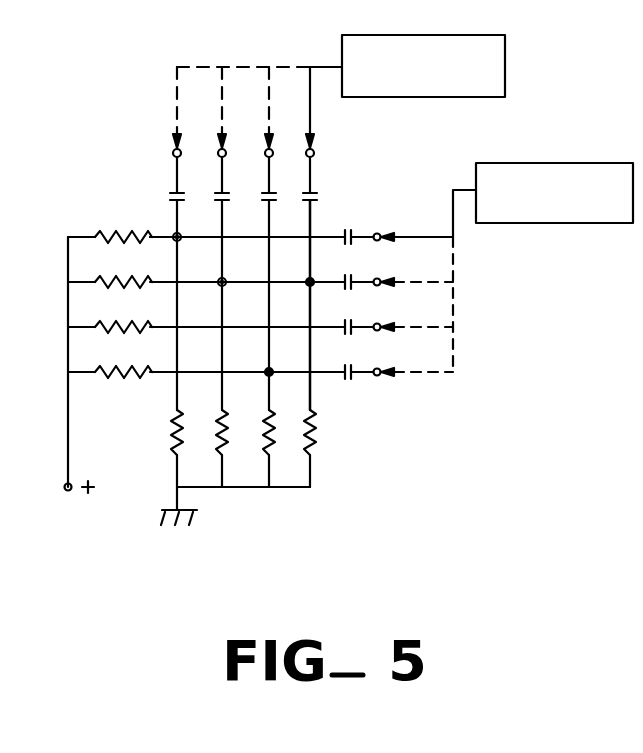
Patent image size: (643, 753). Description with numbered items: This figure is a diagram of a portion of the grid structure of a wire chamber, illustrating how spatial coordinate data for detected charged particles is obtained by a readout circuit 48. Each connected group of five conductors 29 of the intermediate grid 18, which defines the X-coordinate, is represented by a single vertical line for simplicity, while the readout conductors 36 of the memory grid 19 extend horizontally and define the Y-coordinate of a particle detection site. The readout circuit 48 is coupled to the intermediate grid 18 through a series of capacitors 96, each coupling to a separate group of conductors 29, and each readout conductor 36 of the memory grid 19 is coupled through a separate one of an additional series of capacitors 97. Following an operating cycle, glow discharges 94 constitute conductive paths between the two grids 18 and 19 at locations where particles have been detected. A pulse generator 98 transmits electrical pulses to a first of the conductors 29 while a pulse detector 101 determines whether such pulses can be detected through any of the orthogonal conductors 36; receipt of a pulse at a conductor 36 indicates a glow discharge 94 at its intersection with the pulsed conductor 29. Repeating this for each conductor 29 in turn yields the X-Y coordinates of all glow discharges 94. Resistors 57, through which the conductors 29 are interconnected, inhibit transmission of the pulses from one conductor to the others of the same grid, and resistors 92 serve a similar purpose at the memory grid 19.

The intermediate grid 18 is at (313, 218).
The memory grid 19 is at (323, 385).
The conductors 29 is at (310, 318).
The readout conductors 36 is at (243, 239).
The readout circuit 48 is at (522, 148).
The resistors 57 is at (175, 452).
The resistors 92 is at (118, 231).
The glow discharges 94 is at (219, 287).
The capacitors 96 is at (175, 192).
The capacitors 97 is at (355, 378).
The pulse generator 98 is at (397, 97).
The pulse detector 101 is at (488, 222).